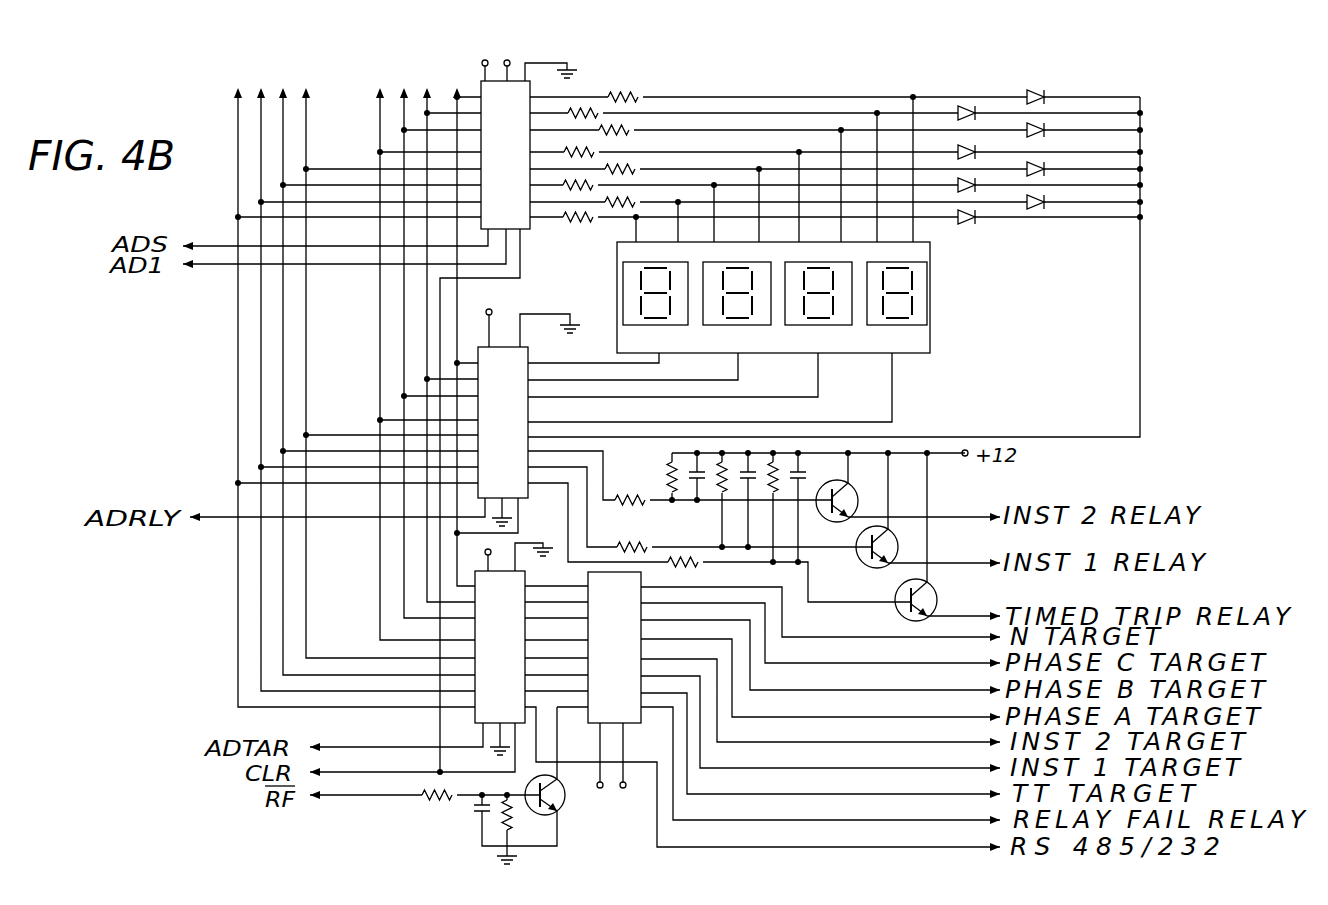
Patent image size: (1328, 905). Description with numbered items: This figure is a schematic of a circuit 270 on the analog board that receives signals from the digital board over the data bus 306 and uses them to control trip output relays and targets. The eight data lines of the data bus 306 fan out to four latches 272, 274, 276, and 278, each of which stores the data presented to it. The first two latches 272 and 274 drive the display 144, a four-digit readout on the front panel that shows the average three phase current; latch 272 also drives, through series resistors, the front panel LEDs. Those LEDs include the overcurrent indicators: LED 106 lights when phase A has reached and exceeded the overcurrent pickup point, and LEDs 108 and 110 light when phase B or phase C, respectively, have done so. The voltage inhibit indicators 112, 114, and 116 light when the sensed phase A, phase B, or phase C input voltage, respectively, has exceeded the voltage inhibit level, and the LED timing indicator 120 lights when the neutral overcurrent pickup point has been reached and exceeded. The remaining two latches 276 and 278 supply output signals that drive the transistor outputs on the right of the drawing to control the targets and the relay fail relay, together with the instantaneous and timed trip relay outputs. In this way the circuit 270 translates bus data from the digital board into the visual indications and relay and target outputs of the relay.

The data bus 306 is at (470, 44).
The latch 272 is at (531, 230).
The latch 274 is at (529, 349).
The latch 276 is at (526, 572).
The latch 278 is at (642, 574).
The display 144 is at (931, 338).
The circuit 270 is at (1170, 333).
The LED 106 is at (968, 224).
The LED 108 is at (1048, 198).
The LED 110 is at (968, 191).
The LED voltage inhibit indicator 112 is at (1048, 163).
The LED voltage inhibit indicator 114 is at (971, 146).
The LED voltage inhibit indicator 116 is at (1037, 122).
The LED timing indicator 120 is at (964, 107).